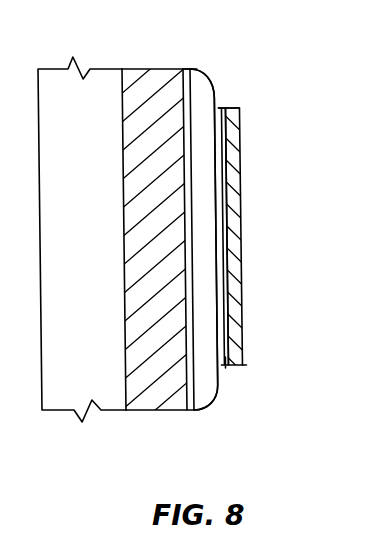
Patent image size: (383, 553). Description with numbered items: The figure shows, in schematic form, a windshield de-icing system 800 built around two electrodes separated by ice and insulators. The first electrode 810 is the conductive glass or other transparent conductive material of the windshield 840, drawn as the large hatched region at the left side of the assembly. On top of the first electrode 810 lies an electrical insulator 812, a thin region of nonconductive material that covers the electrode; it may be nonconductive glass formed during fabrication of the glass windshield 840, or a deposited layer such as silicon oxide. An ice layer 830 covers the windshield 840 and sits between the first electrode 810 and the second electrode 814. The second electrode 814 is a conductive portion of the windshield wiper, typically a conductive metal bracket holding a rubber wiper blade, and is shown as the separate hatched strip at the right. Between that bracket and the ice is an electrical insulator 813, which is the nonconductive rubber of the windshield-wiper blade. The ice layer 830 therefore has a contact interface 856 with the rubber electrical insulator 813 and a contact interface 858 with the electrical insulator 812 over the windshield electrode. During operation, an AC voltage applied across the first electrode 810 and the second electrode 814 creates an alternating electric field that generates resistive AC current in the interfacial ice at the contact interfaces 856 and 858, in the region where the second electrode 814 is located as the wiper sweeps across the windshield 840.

The system 800 is at (249, 62).
The first electrode 810 is at (165, 403).
The electrical insulator 812 is at (190, 411).
The electrical insulator 813 is at (218, 367).
The second electrode 814 is at (237, 292).
The ice layer 830 is at (207, 388).
The windshield 840 is at (93, 245).
The contact interface 856 is at (221, 103).
The contact interface 858 is at (190, 62).